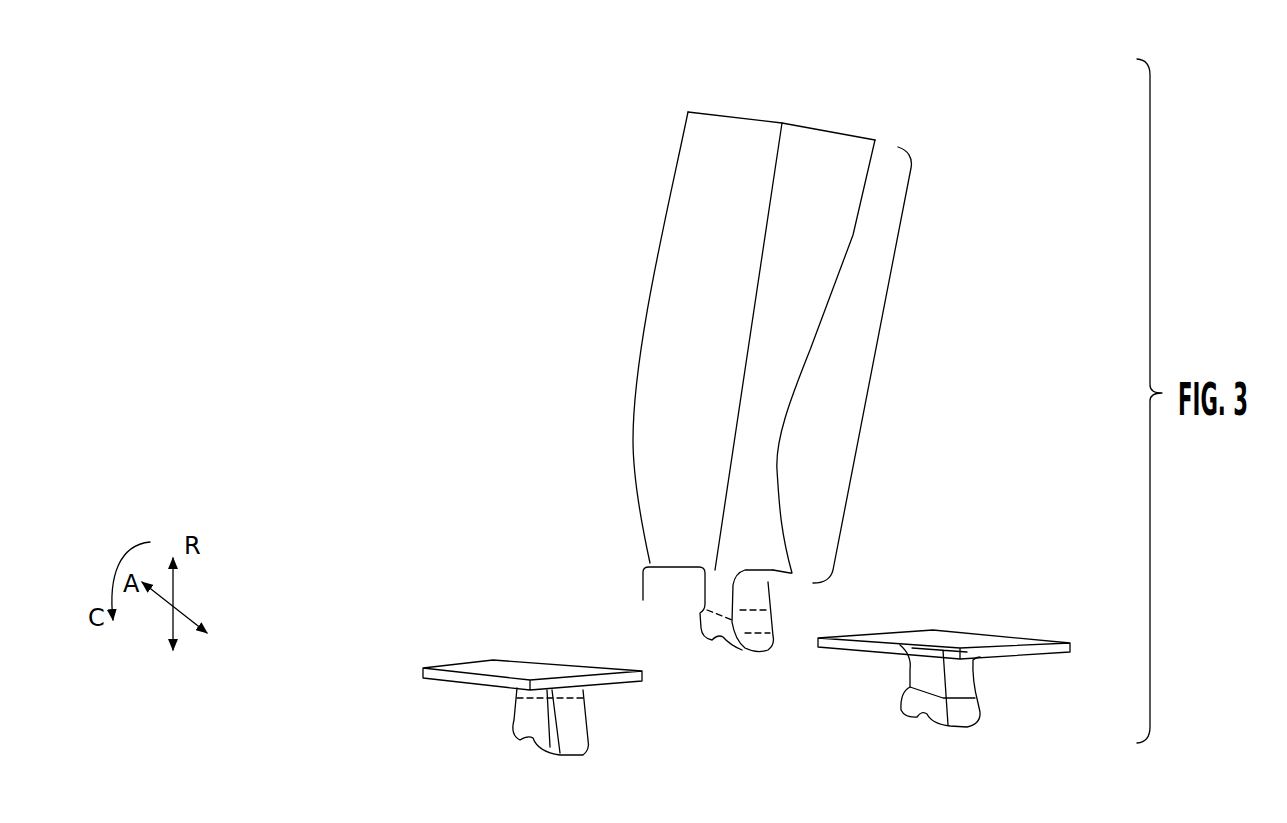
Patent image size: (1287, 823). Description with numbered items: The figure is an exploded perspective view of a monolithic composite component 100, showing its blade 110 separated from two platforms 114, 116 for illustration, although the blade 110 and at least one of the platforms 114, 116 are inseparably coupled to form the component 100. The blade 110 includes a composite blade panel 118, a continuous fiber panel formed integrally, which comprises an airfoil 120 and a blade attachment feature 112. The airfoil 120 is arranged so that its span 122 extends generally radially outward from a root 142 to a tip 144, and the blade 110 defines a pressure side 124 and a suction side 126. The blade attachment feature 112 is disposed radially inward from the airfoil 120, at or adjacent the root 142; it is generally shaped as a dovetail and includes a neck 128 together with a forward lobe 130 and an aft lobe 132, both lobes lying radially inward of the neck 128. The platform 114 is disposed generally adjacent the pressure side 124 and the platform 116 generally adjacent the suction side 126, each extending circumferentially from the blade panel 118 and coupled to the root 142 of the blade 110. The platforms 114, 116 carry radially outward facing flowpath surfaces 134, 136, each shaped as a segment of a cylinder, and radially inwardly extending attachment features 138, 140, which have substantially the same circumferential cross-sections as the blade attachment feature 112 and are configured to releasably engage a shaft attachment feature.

The monolithic composite component 100 is at (305, 100).
The blade 110 is at (522, 183).
The blade attachment feature 112 is at (657, 565).
The platform 114 is at (433, 663).
The platform 116 is at (1040, 632).
The composite blade panel 118 is at (648, 275).
The airfoil 120 is at (873, 344).
The span 122 is at (748, 348).
The pressure side 124 is at (655, 368).
The suction side 126 is at (803, 417).
The neck 128 is at (753, 588).
The forward lobe 130 is at (757, 626).
The aft lobe 132 is at (692, 604).
The flowpath surface 134 is at (482, 672).
The flowpath surface 136 is at (957, 635).
The attachment feature 138 is at (570, 733).
The attachment feature 140 is at (962, 707).
The root 142 is at (800, 560).
The tip 144 is at (810, 125).